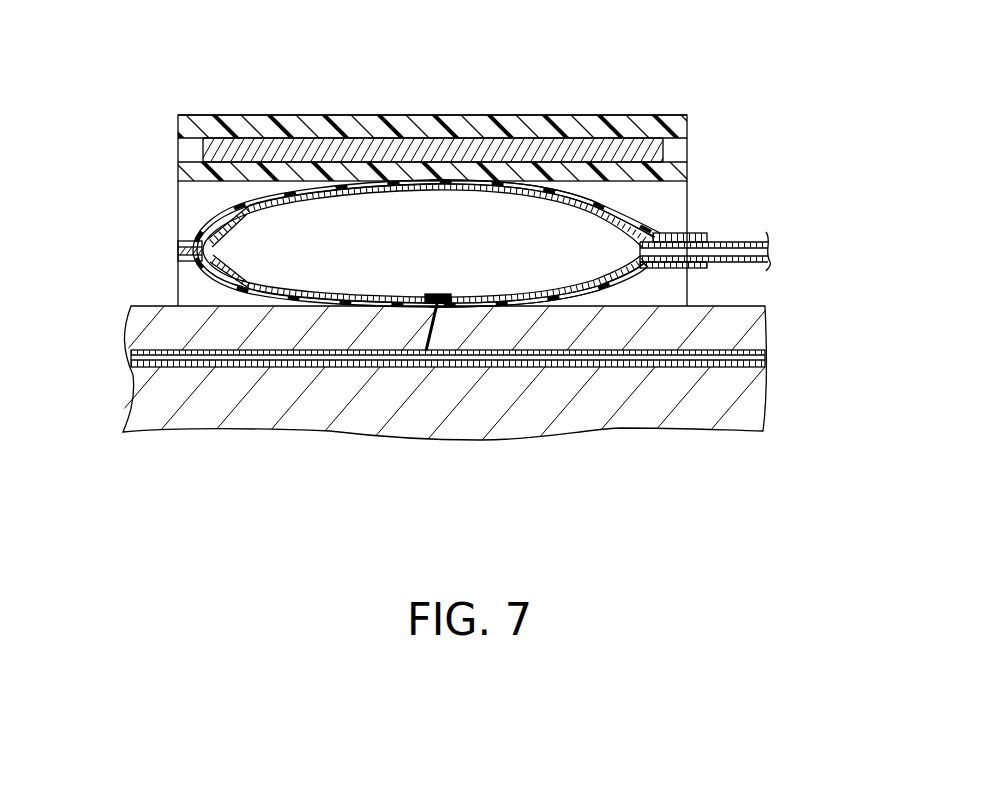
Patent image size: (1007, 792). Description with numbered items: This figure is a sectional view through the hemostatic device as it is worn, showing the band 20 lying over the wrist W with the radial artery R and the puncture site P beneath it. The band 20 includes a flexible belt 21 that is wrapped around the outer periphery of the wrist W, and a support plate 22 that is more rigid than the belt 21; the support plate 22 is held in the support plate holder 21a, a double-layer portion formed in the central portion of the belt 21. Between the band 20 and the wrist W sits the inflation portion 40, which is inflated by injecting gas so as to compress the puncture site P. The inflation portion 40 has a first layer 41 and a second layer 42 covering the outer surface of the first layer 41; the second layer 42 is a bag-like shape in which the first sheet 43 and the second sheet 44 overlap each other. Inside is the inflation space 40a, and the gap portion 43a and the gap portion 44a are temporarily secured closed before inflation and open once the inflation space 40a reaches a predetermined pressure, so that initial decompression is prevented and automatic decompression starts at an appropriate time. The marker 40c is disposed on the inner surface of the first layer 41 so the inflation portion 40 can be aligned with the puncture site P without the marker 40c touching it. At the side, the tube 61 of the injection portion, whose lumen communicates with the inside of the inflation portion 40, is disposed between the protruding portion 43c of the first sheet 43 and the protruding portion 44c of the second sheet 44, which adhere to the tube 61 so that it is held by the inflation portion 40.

The band 20 is at (240, 46).
The belt 21 is at (193, 170).
The support plate holder 21a is at (488, 130).
The support plate 22 is at (238, 150).
The inflation portion 40 is at (68, 165).
The inflation space 40a is at (340, 207).
The marker 40c is at (435, 302).
The first layer 41 is at (260, 200).
The second layer 42 is at (118, 215).
The first sheet 43 is at (210, 218).
The gap portion 43a is at (611, 196).
The protruding portion 43c is at (698, 226).
The second sheet 44 is at (203, 271).
The gap portion 44a is at (600, 302).
The protruding portion 44c is at (710, 264).
The tube 61 is at (757, 264).
The puncture site P is at (430, 315).
The radial artery R is at (657, 367).
The wrist W is at (728, 418).